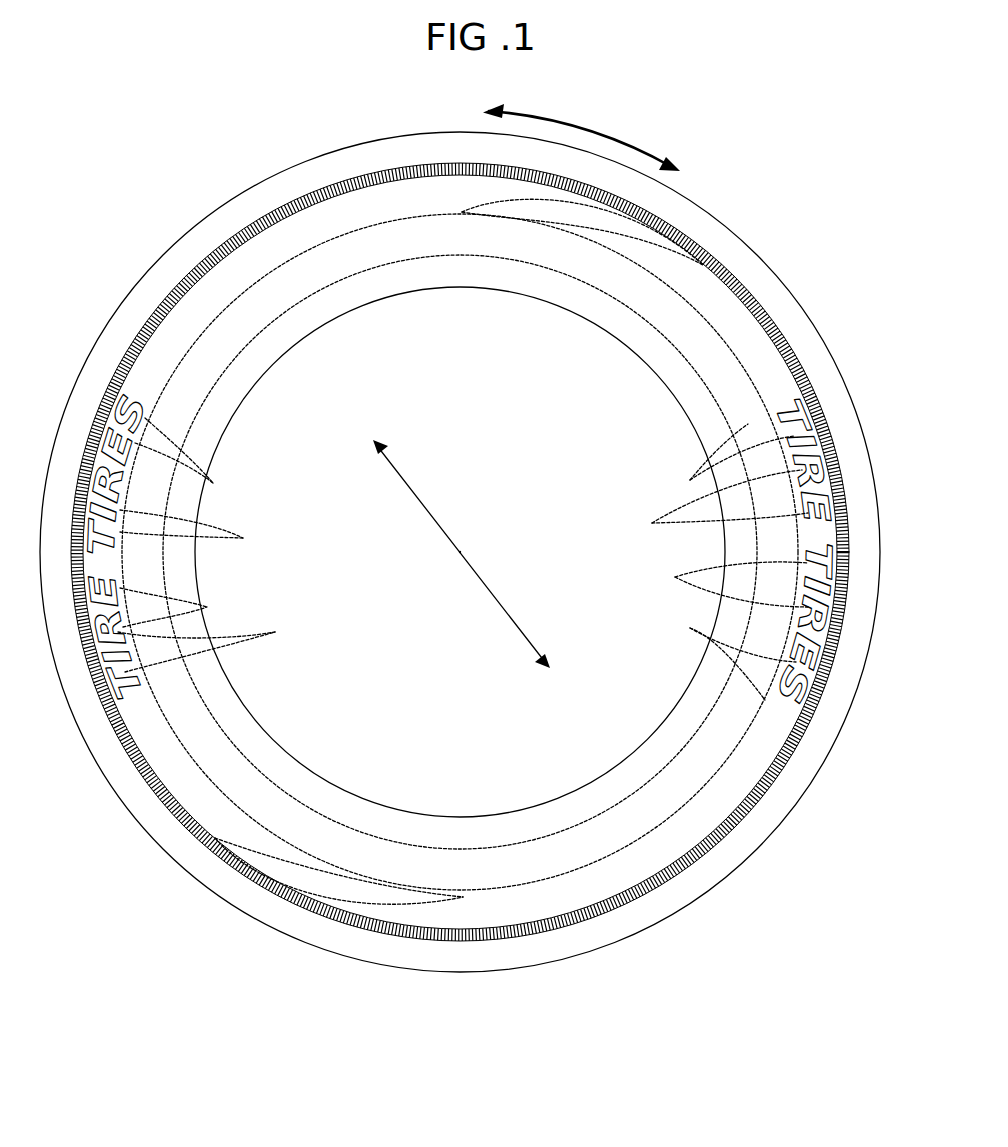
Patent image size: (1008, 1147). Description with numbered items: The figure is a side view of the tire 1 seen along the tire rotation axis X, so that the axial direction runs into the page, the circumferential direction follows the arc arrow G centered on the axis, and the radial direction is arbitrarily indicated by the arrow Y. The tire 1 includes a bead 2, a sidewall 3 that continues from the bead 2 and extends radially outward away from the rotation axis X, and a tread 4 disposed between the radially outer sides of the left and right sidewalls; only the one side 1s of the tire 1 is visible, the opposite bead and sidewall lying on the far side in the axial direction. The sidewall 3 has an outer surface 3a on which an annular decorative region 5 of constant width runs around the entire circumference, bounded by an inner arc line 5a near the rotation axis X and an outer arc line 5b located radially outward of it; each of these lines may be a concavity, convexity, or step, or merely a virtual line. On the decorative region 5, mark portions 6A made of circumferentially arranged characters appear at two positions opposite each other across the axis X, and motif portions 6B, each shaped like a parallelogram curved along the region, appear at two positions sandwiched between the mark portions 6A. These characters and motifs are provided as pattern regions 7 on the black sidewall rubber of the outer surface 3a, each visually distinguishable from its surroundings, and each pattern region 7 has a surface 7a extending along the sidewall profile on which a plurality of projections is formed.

The tire 1 is at (176, 115).
The side of tire 1s is at (683, 788).
The bead 2 is at (373, 288).
The sidewall 3 is at (716, 344).
The outer surface 3a is at (257, 297).
The tread 4 is at (697, 198).
The annular decorative region 5 is at (390, 203).
The inner arc line 5a is at (198, 345).
The outer arc line 5b is at (137, 325).
The mark portion 6A is at (765, 393).
The motif portion 6B is at (665, 272).
The pattern region 7 is at (597, 230).
The surface 7a is at (635, 238).
The arrow indicating tire circumferential direction G is at (581, 135).
The tire rotation axis X is at (464, 552).
The arrow indicating tire radial direction Y is at (399, 437).